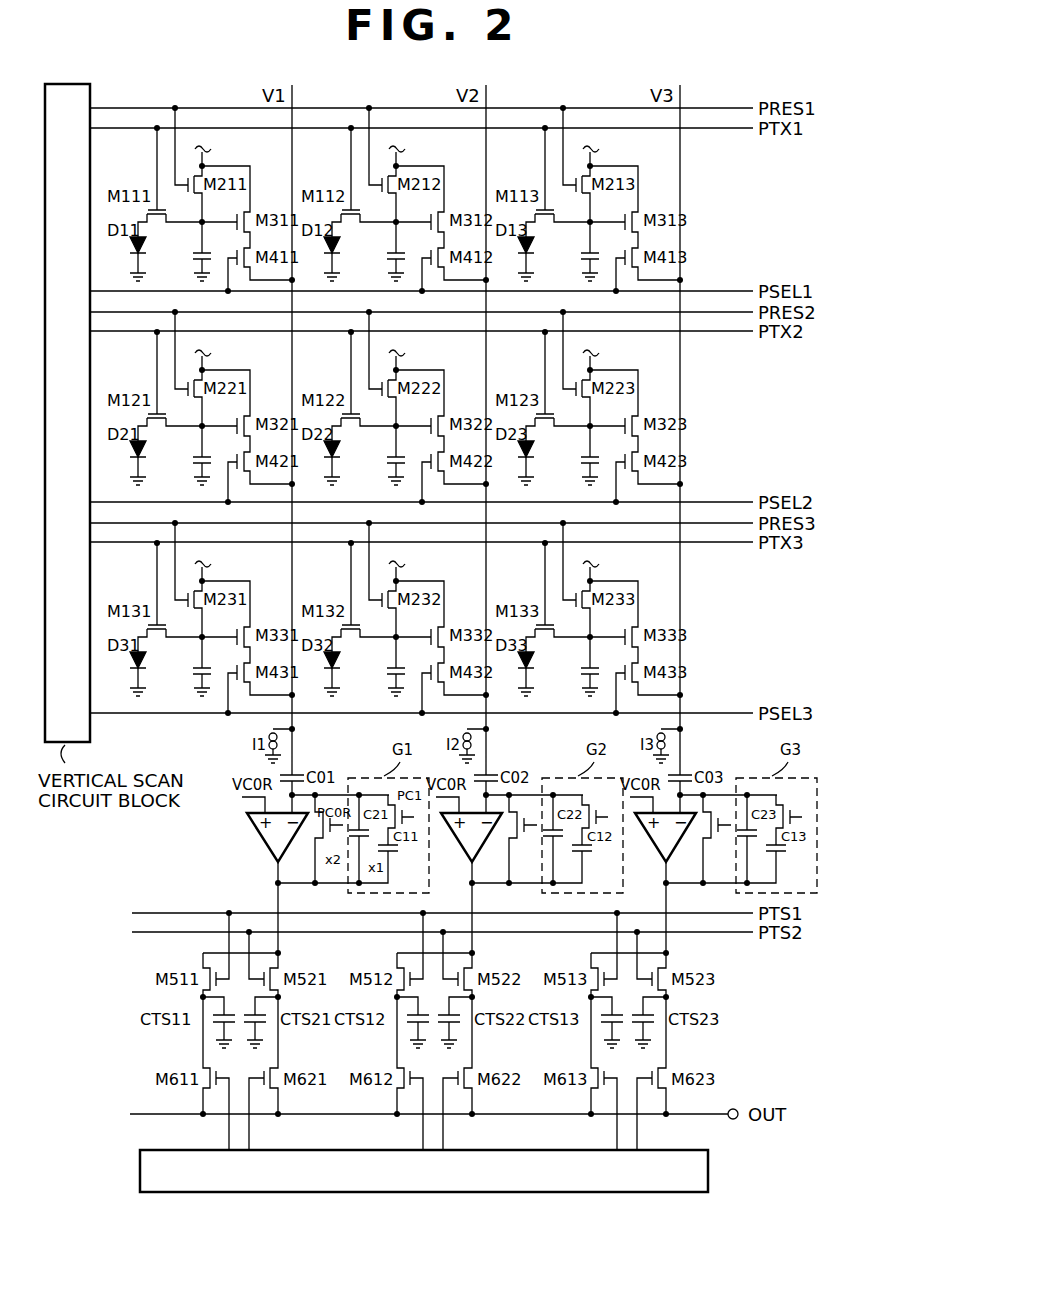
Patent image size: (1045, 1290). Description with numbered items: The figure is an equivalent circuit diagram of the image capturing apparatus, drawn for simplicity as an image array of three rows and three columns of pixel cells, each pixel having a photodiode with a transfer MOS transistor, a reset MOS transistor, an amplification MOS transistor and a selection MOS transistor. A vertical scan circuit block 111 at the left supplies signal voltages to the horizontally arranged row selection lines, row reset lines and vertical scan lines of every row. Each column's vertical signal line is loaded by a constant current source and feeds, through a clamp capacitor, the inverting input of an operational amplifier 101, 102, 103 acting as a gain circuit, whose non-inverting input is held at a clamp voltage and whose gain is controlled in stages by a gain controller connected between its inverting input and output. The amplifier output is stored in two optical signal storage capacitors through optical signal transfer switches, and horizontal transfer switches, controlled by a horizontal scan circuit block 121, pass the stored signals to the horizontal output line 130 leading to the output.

The vertical scan circuit block 111 is at (86, 432).
The operational amplifier 101 is at (270, 848).
The operational amplifier 102 is at (464, 848).
The operational amplifier 103 is at (658, 848).
The horizontal scan circuit block 121 is at (710, 1172).
The horizontal output line 130 is at (146, 1117).